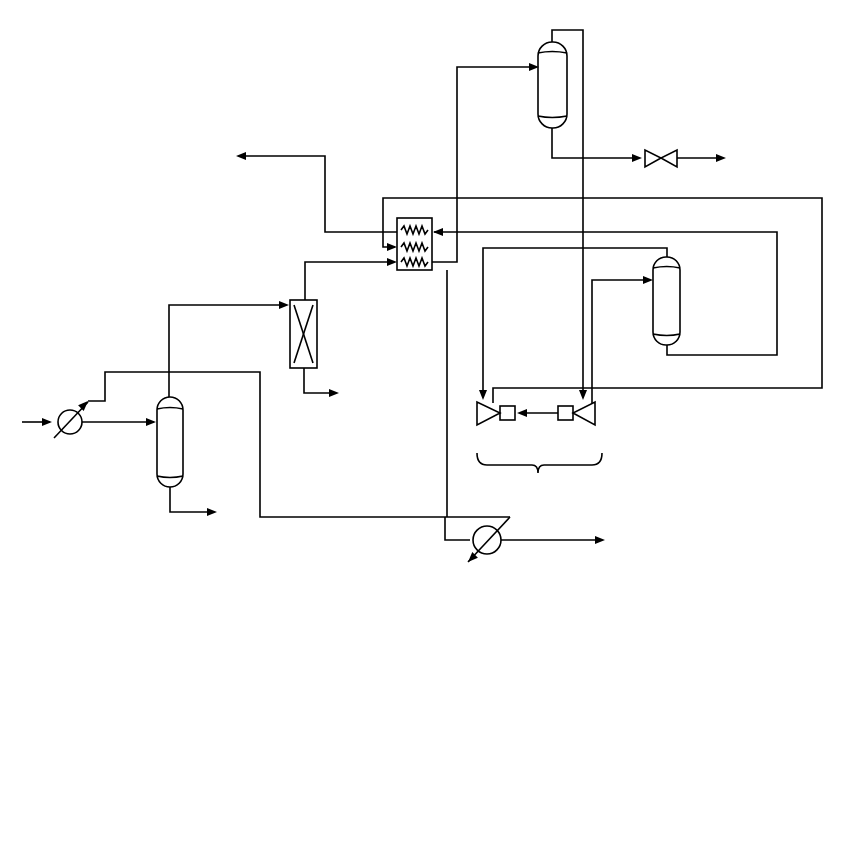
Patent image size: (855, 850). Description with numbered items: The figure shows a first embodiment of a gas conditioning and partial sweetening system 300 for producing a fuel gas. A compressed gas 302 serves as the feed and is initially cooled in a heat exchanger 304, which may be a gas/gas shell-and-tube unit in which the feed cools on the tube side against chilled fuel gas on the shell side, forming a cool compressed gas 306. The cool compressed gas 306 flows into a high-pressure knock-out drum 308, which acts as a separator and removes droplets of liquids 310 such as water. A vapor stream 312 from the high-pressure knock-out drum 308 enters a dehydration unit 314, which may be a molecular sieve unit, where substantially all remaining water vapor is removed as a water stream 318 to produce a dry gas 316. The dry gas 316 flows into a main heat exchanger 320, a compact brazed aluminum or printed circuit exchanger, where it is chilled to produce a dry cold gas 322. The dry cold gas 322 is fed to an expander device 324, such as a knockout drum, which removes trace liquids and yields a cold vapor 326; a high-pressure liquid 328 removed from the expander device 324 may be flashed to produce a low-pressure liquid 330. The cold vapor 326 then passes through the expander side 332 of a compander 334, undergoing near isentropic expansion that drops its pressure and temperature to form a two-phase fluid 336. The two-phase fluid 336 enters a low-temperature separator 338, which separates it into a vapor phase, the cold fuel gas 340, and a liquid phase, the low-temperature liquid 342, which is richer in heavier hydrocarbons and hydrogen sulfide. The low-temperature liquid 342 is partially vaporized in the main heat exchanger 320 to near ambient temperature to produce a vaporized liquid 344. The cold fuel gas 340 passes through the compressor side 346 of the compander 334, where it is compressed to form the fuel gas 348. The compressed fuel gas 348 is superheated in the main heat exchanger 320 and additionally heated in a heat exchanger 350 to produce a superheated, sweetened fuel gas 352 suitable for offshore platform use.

The gas conditioning and partial sweetening system 300 is at (456, 760).
The compressed gas 302 is at (30, 421).
The heat exchanger 304 is at (72, 436).
The cool compressed gas 306 is at (110, 420).
The high-pressure knock-out drum 308 is at (157, 462).
The liquids 310 is at (182, 514).
The vapor stream 312 is at (198, 304).
The dehydration unit 314 is at (318, 323).
The dry gas 316 is at (337, 257).
The water stream 318 is at (308, 386).
The main heat exchanger 320 is at (416, 272).
The dry cold gas 322 is at (456, 114).
The expander device 324 is at (549, 40).
The cold vapor 326 is at (584, 53).
The high-pressure liquid 328 is at (608, 156).
The low-pressure liquid 330 is at (692, 156).
The expander side 332 is at (598, 406).
The compander 334 is at (539, 479).
The two-phase fluid 336 is at (594, 358).
The low-temperature separator 338 is at (681, 292).
The cold fuel gas 340 is at (484, 306).
The low-temperature liquid 342 is at (712, 355).
The vaporized liquid 344 is at (327, 163).
The compressor side 346 is at (487, 427).
The fuel gas 348 is at (822, 222).
The heat exchanger 350 is at (488, 555).
The superheated, sweetened fuel gas 352 is at (558, 542).